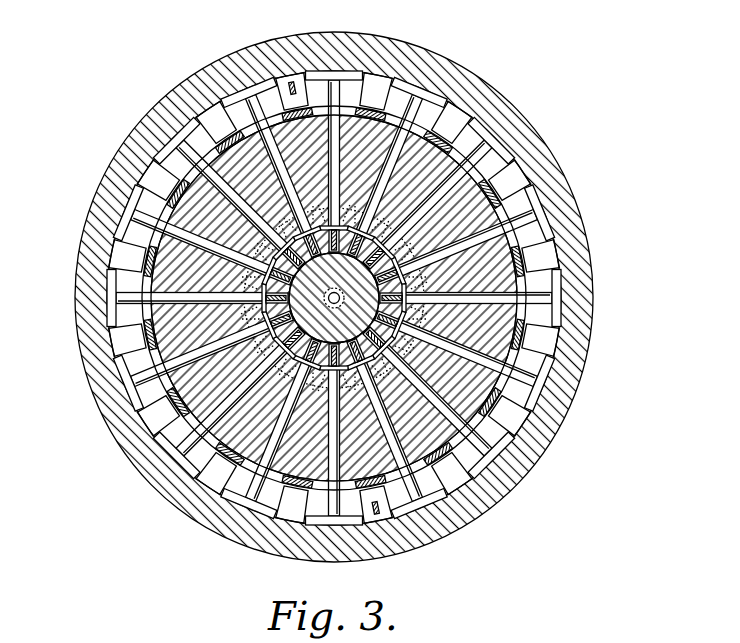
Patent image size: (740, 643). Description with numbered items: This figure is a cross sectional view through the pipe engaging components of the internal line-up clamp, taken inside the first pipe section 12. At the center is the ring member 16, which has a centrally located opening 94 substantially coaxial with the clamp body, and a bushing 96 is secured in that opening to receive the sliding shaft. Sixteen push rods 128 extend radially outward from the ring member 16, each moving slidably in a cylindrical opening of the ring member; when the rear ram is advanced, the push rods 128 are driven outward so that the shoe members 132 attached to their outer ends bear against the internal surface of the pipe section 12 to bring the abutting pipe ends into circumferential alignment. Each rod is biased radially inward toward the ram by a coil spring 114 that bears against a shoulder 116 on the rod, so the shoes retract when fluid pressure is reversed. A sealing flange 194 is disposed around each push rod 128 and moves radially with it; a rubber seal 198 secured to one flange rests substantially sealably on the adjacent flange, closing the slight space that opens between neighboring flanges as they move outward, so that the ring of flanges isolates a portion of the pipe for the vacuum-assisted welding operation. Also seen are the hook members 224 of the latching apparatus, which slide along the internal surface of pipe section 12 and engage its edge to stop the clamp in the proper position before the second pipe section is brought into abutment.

The first pipe section 12 is at (140, 131).
The ring member 16 is at (277, 298).
The centrally located opening 94 is at (339, 317).
The bushing 96 is at (337, 286).
The coil spring 114 is at (334, 298).
The shoulder 116 is at (345, 318).
The push rod 128 is at (355, 298).
The shoe member 132 is at (334, 294).
The sealing flange 194 is at (397, 298).
The rubber seal 198 is at (334, 298).
The hook member 224 is at (358, 293).